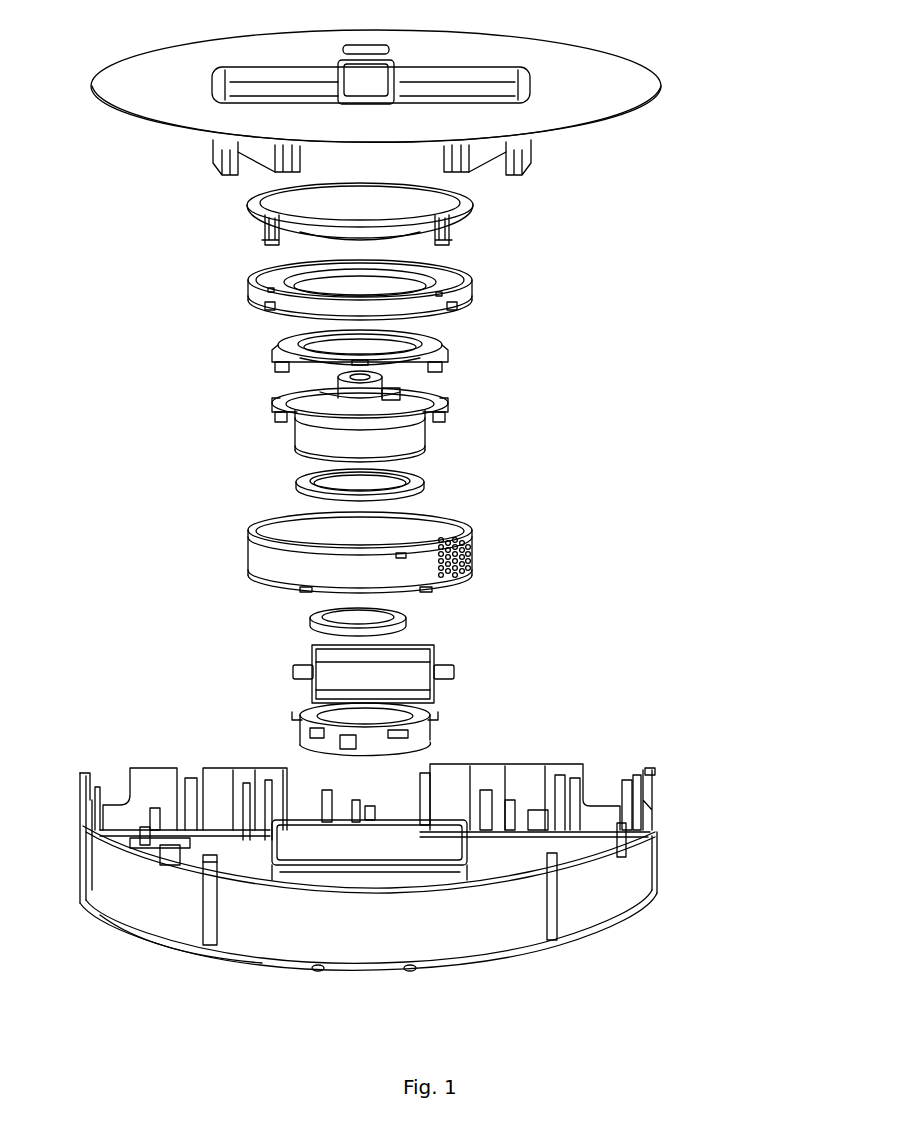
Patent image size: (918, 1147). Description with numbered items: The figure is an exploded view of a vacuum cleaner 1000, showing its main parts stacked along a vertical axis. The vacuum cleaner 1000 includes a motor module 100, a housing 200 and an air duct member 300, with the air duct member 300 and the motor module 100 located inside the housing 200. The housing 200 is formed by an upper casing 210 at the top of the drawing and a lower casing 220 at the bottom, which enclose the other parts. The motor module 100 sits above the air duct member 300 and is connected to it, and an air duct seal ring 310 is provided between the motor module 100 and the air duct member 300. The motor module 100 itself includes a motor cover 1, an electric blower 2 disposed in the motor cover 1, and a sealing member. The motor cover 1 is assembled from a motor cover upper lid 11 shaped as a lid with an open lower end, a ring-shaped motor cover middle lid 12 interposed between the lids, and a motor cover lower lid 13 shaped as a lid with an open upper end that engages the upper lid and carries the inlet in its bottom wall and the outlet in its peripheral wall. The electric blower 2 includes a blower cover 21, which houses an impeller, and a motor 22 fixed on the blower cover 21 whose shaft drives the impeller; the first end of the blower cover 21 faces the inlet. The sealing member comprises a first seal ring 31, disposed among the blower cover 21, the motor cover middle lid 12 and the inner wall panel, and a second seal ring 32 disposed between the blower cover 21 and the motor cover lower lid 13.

The vacuum cleaner 1000 is at (118, 27).
The motor module 100 is at (190, 358).
The housing 200 is at (435, 500).
The upper casing 210 is at (587, 91).
The lower casing 220 is at (593, 897).
The motor cover 1 is at (587, 242).
The motor cover upper lid 11 is at (462, 208).
The motor cover middle lid 12 is at (423, 297).
The motor cover lower lid 13 is at (473, 535).
The electric blower 2 is at (222, 376).
The blower cover 21 is at (310, 428).
The motor 22 is at (357, 392).
The first seal ring 31 is at (305, 341).
The second seal ring 32 is at (305, 483).
The air duct member 300 is at (395, 693).
The air duct seal ring 310 is at (405, 625).